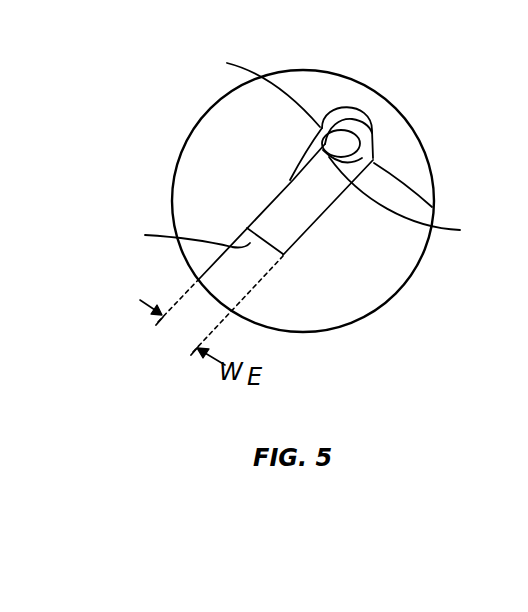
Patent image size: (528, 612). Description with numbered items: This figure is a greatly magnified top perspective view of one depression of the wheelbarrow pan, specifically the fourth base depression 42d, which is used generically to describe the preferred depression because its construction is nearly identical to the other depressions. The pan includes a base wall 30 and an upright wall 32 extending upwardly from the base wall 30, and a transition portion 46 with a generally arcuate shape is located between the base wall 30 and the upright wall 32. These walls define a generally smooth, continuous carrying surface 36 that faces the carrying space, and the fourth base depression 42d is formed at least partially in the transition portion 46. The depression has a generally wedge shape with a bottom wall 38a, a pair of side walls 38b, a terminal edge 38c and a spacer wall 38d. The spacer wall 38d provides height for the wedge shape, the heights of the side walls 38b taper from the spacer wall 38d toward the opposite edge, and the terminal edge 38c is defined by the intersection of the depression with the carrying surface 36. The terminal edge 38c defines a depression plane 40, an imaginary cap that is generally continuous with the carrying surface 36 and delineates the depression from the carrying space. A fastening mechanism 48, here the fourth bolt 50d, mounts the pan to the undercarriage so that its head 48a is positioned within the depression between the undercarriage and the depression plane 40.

The base wall 30 is at (397, 278).
The upright wall 32 is at (225, 130).
The carrying surface 36 is at (337, 305).
The bottom wall 38a is at (272, 211).
The side walls 38b is at (290, 178).
The terminal edge 38c is at (207, 151).
The spacer wall 38d is at (374, 131).
The depression plane 40 is at (218, 273).
The fourth base depression 42d is at (380, 110).
The transition portion 46 is at (333, 73).
The fastening mechanism 48 is at (370, 161).
The head 48a is at (344, 145).
The fourth bolt 50d is at (420, 201).